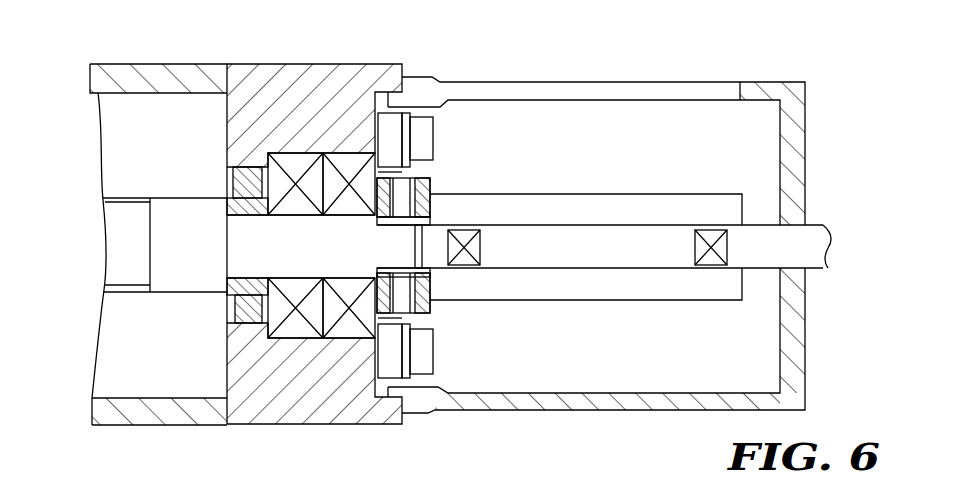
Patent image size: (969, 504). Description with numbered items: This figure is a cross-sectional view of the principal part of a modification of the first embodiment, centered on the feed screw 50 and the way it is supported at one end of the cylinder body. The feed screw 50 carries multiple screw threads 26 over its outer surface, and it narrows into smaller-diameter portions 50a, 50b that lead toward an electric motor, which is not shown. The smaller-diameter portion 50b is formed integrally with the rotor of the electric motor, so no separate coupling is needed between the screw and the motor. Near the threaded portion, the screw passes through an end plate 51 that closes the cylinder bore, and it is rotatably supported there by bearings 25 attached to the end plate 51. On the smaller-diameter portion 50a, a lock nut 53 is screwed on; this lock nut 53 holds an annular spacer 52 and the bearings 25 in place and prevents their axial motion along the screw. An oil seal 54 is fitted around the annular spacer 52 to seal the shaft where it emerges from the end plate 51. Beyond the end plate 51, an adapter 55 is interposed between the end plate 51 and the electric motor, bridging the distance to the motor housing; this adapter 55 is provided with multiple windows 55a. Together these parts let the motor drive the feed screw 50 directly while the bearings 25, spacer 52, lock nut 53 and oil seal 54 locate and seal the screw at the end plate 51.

The feed screw 50 is at (98, 238).
The screw threads 26 is at (125, 290).
The end plate 51 is at (267, 78).
The smaller-diameter portion 50a is at (282, 265).
The oil seal 54 is at (240, 186).
The spacer 52 is at (230, 292).
The bearings 25 is at (352, 167).
The lock nut 53 is at (393, 303).
The adapter 55 is at (790, 130).
The windows 55a is at (538, 90).
The smaller-diameter portion 50b is at (672, 265).